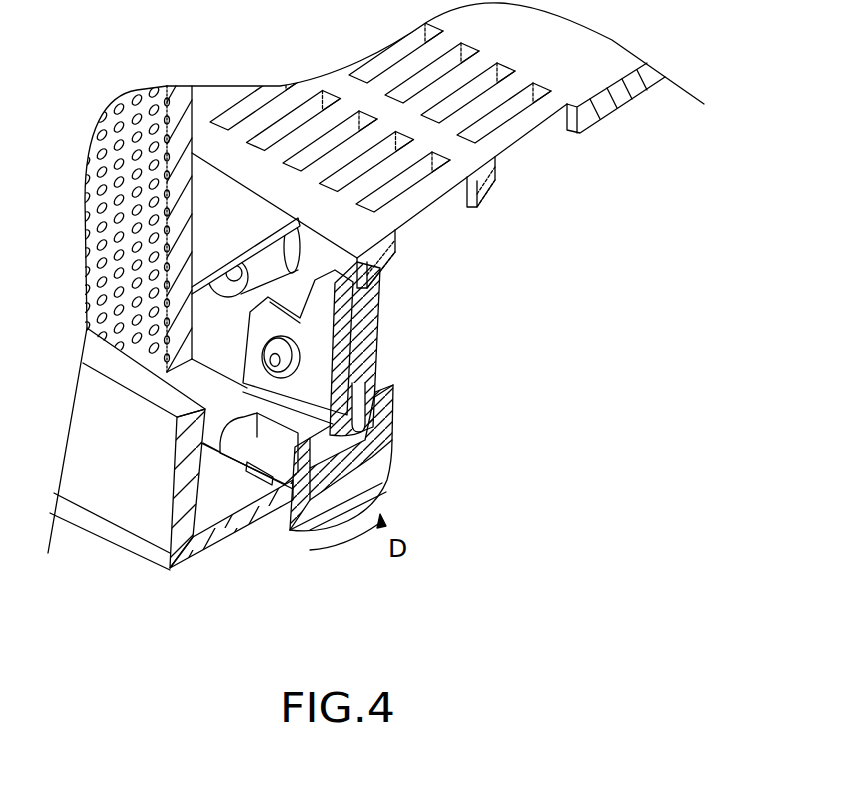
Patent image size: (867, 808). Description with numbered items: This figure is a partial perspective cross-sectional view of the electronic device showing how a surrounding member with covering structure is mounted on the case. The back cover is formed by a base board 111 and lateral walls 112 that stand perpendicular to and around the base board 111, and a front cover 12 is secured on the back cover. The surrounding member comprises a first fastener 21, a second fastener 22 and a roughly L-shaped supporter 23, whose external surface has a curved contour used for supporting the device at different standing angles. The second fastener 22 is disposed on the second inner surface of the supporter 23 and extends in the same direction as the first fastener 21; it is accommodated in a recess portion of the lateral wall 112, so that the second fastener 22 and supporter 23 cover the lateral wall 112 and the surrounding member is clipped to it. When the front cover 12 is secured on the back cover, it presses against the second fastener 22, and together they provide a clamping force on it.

The front cover 12 is at (157, 512).
The first fastener 21 is at (320, 352).
The second fastener 22 is at (265, 455).
The supporter 23 is at (370, 488).
The base board 111 is at (366, 318).
The lateral wall 112 is at (367, 462).